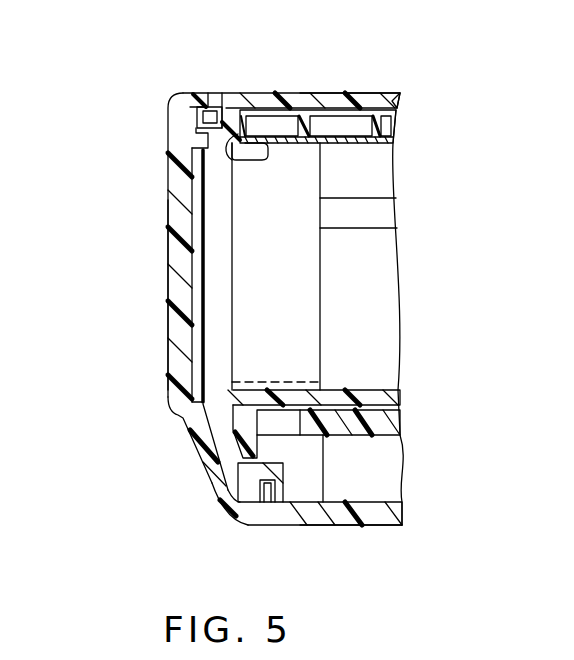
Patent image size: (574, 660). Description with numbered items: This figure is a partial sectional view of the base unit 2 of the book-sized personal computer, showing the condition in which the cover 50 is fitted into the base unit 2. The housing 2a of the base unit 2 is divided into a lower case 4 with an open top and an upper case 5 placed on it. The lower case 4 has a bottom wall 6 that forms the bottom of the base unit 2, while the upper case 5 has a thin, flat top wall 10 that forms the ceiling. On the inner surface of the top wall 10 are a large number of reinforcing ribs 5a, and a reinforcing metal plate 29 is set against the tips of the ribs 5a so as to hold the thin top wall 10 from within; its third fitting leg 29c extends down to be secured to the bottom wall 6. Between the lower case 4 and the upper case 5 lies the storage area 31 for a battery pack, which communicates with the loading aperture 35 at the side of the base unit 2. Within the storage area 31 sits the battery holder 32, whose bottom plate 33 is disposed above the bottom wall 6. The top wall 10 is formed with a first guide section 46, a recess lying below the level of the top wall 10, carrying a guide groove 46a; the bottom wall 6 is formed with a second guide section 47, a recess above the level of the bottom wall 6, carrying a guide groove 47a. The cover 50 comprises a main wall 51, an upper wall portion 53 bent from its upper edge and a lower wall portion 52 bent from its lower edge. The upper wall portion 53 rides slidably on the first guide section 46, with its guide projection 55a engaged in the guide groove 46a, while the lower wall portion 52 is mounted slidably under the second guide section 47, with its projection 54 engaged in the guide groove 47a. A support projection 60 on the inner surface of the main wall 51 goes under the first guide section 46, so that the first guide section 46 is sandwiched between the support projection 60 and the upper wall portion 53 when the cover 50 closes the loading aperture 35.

The base unit 2 is at (400, 73).
The housing 2a is at (352, 92).
The lower case 4 is at (400, 515).
The upper case 5 is at (398, 100).
The reinforcing ribs 5a is at (312, 118).
The bottom wall 6 is at (373, 527).
The top wall 10 is at (295, 92).
The reinforcing metal plate 29 is at (398, 150).
The third fitting leg 29c is at (248, 278).
The storage area 31 is at (372, 292).
The battery holder 32 is at (233, 418).
The bottom plate 33 is at (372, 397).
The loading aperture 35 is at (205, 370).
The first guide section 46 is at (203, 122).
The guide groove 46a is at (224, 93).
The second guide section 47 is at (210, 487).
The guide groove 47a is at (243, 517).
The cover 50 is at (168, 328).
The main wall 51 is at (178, 215).
The lower wall portion 52 is at (263, 515).
The upper wall portion 53 is at (205, 97).
The projection 54 is at (283, 478).
The guide projection 55a is at (237, 162).
The support projection 60 is at (197, 143).